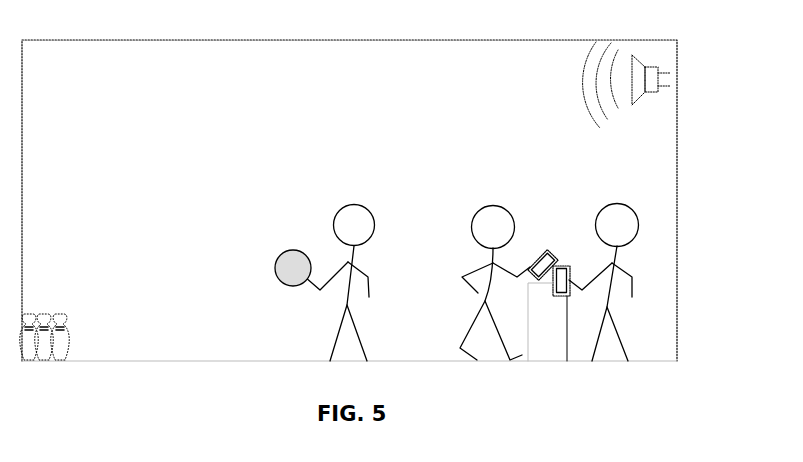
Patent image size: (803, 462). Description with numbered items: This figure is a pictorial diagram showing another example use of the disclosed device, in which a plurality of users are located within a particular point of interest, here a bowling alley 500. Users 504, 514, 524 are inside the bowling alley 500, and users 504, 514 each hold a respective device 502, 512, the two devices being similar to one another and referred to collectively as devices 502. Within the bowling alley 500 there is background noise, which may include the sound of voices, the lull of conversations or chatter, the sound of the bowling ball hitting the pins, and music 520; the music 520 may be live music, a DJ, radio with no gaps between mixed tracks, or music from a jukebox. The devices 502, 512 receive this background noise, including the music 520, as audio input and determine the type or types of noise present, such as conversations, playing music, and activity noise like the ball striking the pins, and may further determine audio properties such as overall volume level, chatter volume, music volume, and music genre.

The bowling alley 500 is at (40, 49).
The device 502 is at (549, 250).
The user 504 is at (473, 319).
The device 512 is at (561, 266).
The user 514 is at (621, 332).
The music 520 is at (645, 50).
The user 524 is at (328, 328).